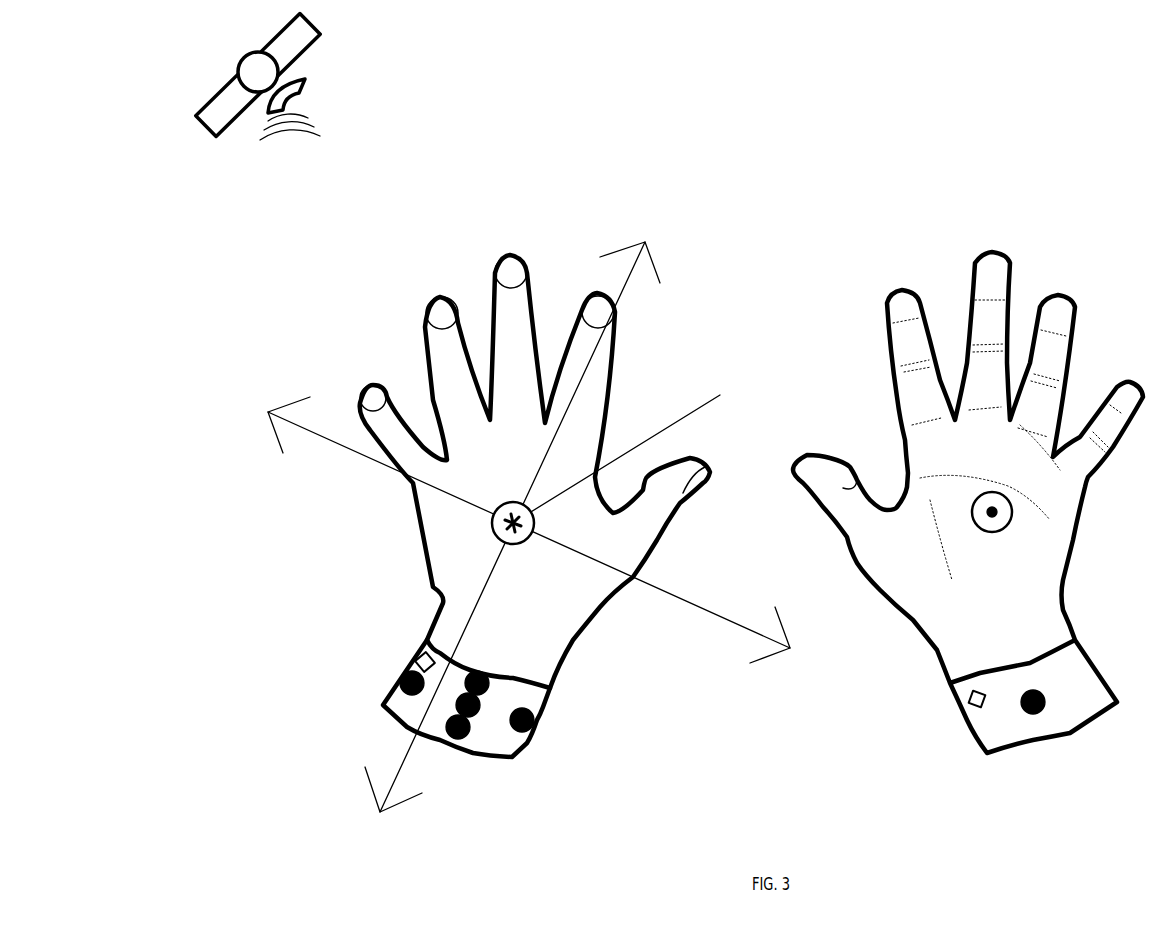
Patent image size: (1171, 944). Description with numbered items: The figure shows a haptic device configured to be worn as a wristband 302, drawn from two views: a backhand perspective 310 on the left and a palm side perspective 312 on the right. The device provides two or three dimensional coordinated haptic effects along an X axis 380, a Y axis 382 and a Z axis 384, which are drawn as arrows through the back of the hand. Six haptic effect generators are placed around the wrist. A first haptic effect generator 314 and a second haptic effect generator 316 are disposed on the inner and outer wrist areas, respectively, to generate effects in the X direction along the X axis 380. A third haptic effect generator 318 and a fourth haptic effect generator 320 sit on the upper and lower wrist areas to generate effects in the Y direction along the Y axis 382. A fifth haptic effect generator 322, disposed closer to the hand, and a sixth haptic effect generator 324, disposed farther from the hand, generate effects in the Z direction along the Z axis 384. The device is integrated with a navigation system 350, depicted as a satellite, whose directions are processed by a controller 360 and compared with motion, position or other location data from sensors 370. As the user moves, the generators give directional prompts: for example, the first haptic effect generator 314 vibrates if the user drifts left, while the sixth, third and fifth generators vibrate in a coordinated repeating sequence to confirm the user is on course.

The wristband 302 is at (530, 708).
The backhand perspective 310 is at (526, 583).
The palm side perspective 312 is at (1008, 580).
The first haptic effect generator 314 is at (540, 723).
The second haptic effect generator 316 is at (410, 672).
The third haptic effect generator 318 is at (468, 705).
The fourth haptic effect generator 320 is at (1043, 703).
The fifth haptic effect generator 322 is at (476, 672).
The sixth haptic effect generator 324 is at (445, 727).
The navigation system 350 is at (322, 57).
The controller 360 is at (422, 650).
The sensors 370 is at (970, 705).
The X axis 380 is at (276, 435).
The Y axis 382 is at (973, 502).
The Z axis 384 is at (658, 250).